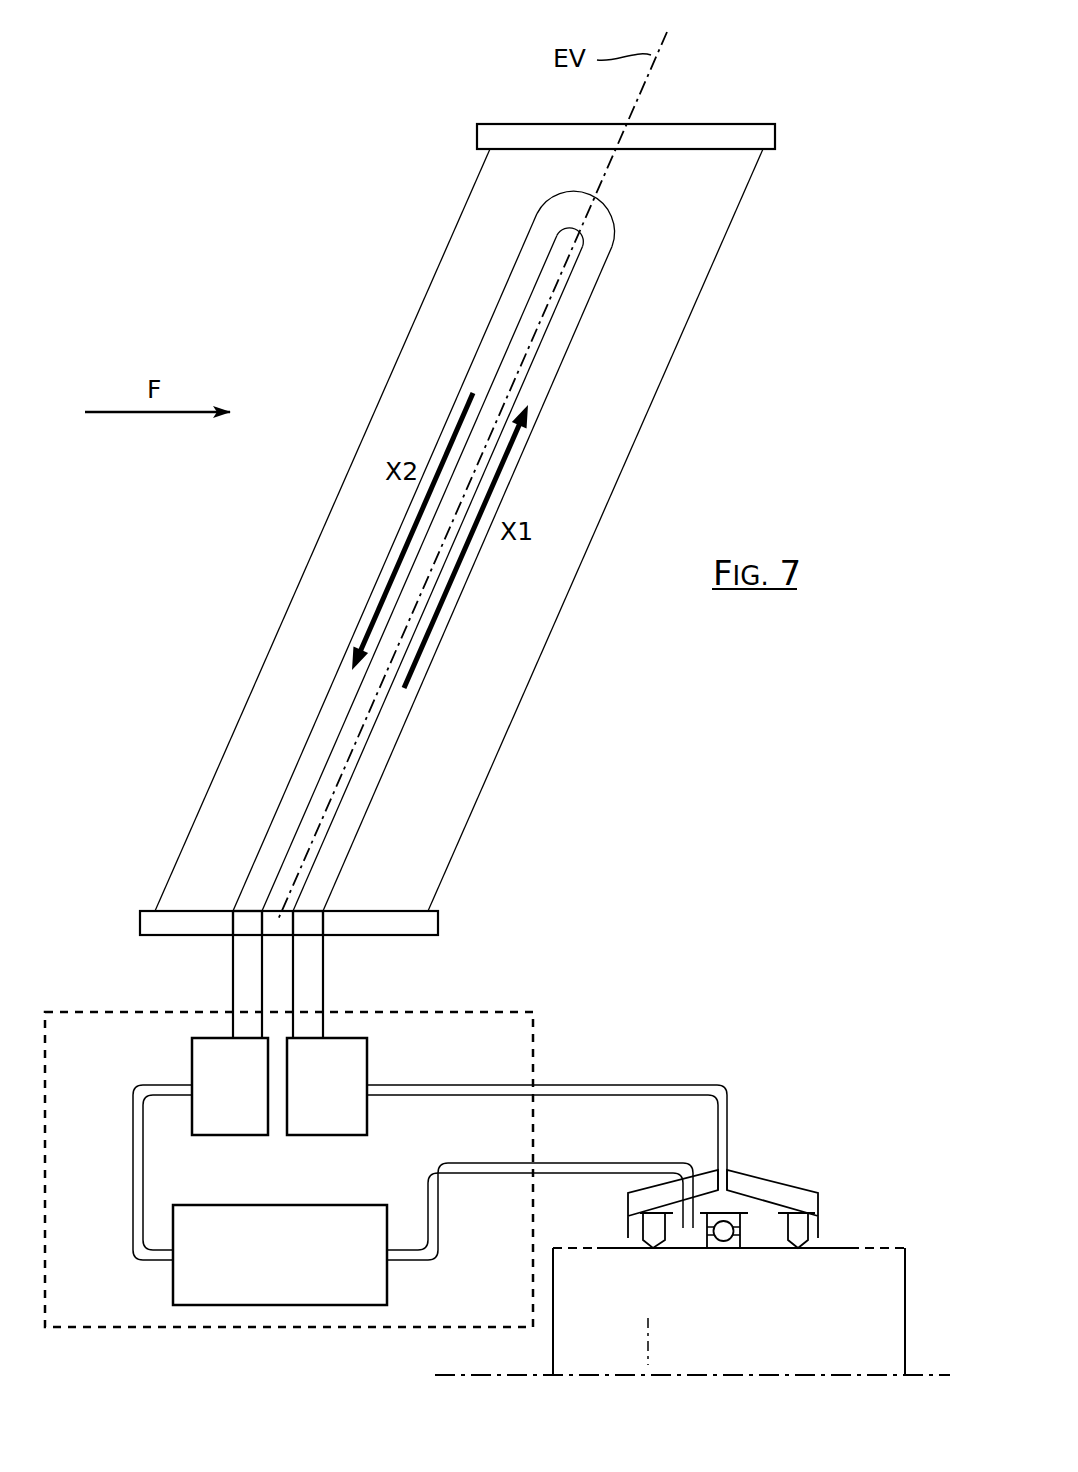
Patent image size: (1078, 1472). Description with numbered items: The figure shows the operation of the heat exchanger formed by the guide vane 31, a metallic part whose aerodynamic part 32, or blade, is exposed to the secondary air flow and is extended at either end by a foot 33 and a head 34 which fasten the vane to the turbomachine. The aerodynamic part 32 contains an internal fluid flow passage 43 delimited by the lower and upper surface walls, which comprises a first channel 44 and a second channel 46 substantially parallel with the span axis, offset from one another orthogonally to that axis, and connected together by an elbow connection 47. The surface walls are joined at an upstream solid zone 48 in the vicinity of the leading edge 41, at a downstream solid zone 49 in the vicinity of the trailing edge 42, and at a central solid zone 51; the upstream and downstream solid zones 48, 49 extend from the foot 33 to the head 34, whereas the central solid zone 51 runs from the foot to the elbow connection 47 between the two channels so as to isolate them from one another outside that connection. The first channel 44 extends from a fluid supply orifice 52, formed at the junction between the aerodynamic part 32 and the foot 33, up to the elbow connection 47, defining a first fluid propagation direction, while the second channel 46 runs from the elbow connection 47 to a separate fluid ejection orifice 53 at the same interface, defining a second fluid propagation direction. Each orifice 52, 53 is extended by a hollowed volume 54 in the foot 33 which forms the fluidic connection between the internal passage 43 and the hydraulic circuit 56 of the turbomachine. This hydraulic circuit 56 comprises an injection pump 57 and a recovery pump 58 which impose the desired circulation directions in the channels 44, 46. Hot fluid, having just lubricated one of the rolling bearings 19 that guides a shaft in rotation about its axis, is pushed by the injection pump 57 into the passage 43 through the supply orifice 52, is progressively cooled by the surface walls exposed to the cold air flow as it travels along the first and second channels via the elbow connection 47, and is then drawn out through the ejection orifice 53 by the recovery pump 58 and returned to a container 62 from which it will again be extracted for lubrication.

The rolling bearing 19 is at (810, 1145).
The guide vane 31 is at (278, 85).
The aerodynamic part 32 is at (691, 369).
The foot 33 is at (382, 942).
The head 34 is at (482, 113).
The leading edge 41 is at (328, 518).
The trailing edge 42 is at (607, 505).
The internal fluid flow passage 43 is at (315, 200).
The first channel 44 is at (562, 304).
The second channel 46 is at (474, 360).
The elbow connection 47 is at (580, 192).
The upstream solid zone 48 is at (298, 650).
The downstream solid zone 49 is at (482, 678).
The central solid zone 51 is at (325, 776).
The fluid supply orifice 52 is at (312, 908).
The fluid ejection orifice 53 is at (249, 908).
The hollowed volume 54 is at (307, 922).
The hydraulic circuit 56 is at (386, 1169).
The injection pump 57 is at (327, 1086).
The recovery pump 58 is at (230, 1086).
The container 62 is at (280, 1255).